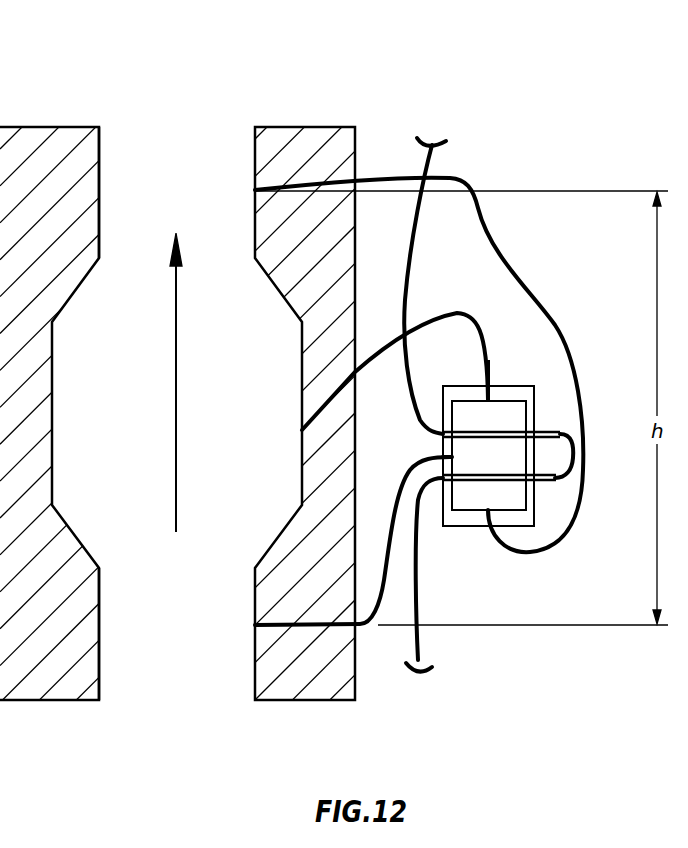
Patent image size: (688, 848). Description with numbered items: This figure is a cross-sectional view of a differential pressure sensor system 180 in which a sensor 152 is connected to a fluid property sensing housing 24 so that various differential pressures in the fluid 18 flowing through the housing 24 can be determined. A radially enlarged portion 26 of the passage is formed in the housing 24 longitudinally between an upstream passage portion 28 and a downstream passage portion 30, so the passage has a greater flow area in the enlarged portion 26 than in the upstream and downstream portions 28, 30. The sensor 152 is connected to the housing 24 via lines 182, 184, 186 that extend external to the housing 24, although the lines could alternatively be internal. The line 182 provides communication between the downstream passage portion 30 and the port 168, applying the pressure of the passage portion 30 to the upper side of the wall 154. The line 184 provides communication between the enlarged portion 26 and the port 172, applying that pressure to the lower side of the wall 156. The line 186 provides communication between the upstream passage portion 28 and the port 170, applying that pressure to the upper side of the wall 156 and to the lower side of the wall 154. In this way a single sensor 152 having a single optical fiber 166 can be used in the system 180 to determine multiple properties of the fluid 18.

The fluid 18 is at (215, 432).
The housing 24 is at (364, 691).
The radially enlarged portion 26 is at (52, 378).
The upstream passage portion 28 is at (99, 615).
The downstream passage portion 30 is at (100, 208).
The sensor 152 is at (545, 386).
The wall 154 is at (547, 427).
The wall 156 is at (548, 485).
The optical fiber 166 is at (407, 293).
The port 168 is at (490, 387).
The port 170 is at (440, 452).
The port 172 is at (487, 530).
The differential pressure sensor system 180 is at (492, 106).
The line 182 is at (520, 285).
The line 184 is at (480, 315).
The line 186 is at (420, 457).